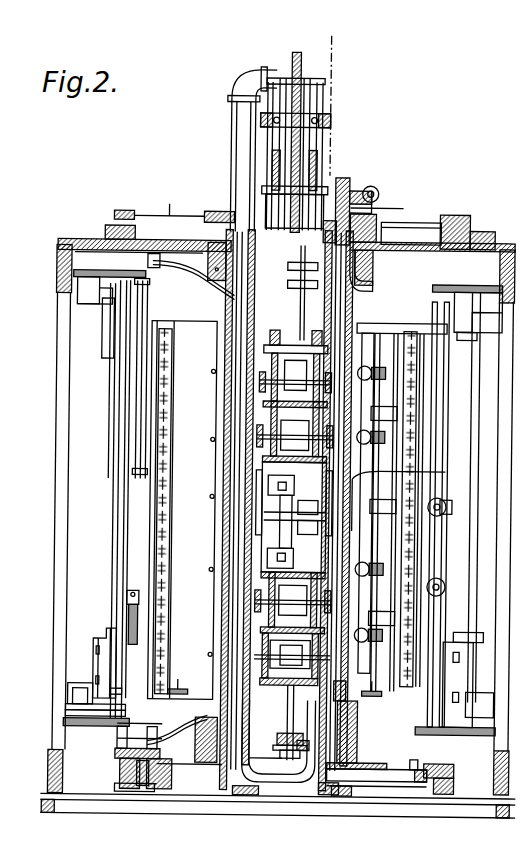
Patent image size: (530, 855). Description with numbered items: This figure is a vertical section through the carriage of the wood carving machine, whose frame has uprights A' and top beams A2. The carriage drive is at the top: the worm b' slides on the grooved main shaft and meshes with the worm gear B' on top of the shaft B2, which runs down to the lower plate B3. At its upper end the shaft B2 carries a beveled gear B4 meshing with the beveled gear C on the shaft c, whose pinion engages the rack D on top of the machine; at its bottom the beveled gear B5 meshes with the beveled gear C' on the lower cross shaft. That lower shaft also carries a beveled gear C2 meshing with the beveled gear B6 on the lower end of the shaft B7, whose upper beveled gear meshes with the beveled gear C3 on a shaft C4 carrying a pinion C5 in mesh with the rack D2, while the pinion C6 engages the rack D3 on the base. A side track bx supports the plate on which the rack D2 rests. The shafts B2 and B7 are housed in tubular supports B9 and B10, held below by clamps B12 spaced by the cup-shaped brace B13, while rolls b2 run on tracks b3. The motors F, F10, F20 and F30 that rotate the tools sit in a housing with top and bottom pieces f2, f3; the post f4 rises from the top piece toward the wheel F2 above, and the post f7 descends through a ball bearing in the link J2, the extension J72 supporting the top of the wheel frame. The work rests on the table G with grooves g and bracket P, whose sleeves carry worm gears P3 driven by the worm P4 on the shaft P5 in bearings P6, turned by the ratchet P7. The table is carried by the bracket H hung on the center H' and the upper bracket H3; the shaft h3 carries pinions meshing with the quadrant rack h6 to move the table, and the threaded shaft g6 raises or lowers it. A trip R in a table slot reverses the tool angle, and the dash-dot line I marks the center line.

The wheel F2 is at (291, 58).
The center line I is at (329, 93).
The extension of post J72 is at (237, 130).
The worm gear B' is at (353, 196).
The worm b' is at (387, 190).
The shaft B2 is at (370, 209).
The shaft c is at (425, 222).
The beveled gear C2 is at (462, 214).
The rack D is at (478, 233).
The block C5 is at (117, 212).
The rod C4 is at (169, 201).
The beveled gear C3 is at (217, 212).
The rack D2 is at (104, 230).
The top beam A2 is at (60, 243).
The side track bx is at (125, 252).
The bottom piece of housing f3 is at (190, 272).
The tubular support B10 is at (224, 318).
The beveled gear B4 is at (324, 232).
The beveled gear C is at (429, 521).
The bearing P6 is at (393, 330).
The bracket H3 is at (108, 328).
The top piece of housing f2 is at (274, 330).
The post f4 is at (300, 320).
The motor F is at (295, 377).
The motor F10 is at (290, 430).
The bracket P is at (183, 510).
The table G is at (168, 520).
The groove g is at (168, 547).
The worm P4 is at (372, 440).
The shaft P5 is at (445, 470).
The worm gear P3 is at (372, 505).
The shaft B7 is at (232, 603).
The motor F20 is at (290, 610).
The threaded shaft g6 is at (128, 603).
The trip R is at (372, 658).
The bracket H is at (66, 671).
The center H' is at (49, 688).
The shaft h3 is at (126, 692).
The plate B3 is at (155, 750).
The clamp B12 is at (195, 728).
The motor F30 is at (284, 680).
The post f7 is at (284, 708).
The tubular support B9 is at (322, 690).
The ratchet P7 is at (186, 694).
The upright A' is at (261, 760).
The quadrant rack h6 is at (85, 728).
The track b3 is at (123, 772).
The rack D3 is at (153, 772).
The link J2 is at (279, 741).
The brace B13 is at (361, 742).
The roll b2 is at (424, 760).
The beveled gear C' is at (376, 804).
The pinion C6 is at (140, 795).
The beveled gear B6 is at (242, 796).
The beveled gear B5 is at (322, 795).